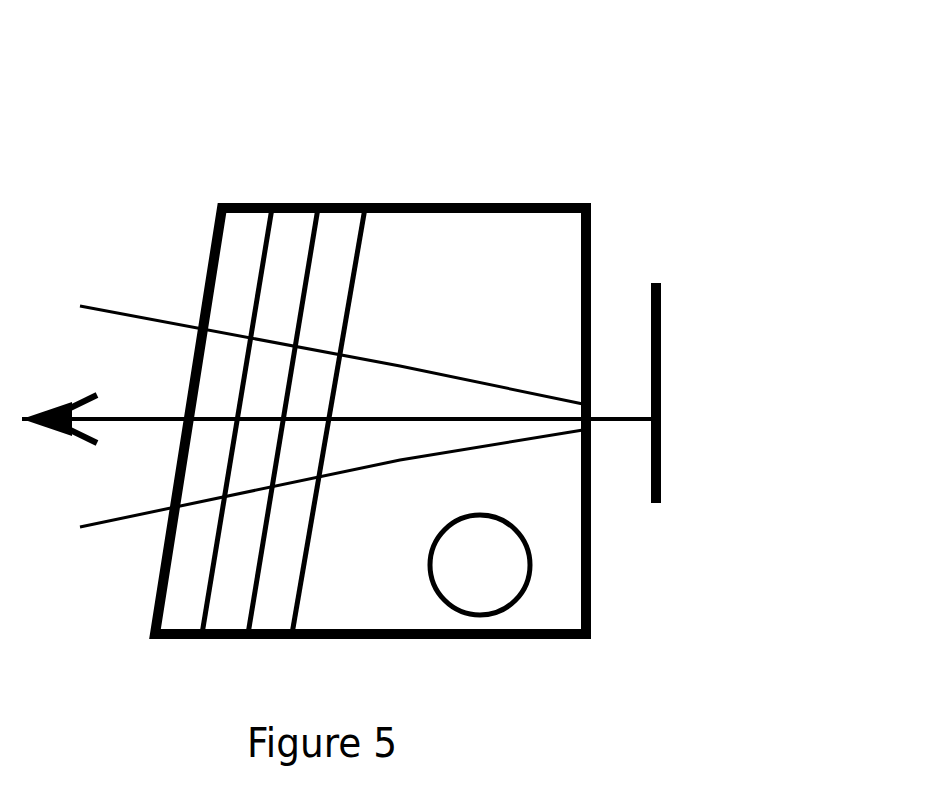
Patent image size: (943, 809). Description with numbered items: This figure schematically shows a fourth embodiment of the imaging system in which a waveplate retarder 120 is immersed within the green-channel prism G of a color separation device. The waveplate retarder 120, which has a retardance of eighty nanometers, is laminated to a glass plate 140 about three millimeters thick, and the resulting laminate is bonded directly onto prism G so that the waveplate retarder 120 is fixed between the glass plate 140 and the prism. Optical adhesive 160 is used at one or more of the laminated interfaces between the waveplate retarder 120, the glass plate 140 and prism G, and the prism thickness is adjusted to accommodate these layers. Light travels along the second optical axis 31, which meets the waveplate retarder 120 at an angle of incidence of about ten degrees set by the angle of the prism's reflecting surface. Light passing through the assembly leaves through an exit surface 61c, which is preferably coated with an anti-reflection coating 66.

The second optical axis 31 is at (130, 419).
The exit surface 61c is at (592, 306).
The anti-reflection coating 66 is at (477, 425).
The waveplate retarder 120 is at (306, 205).
The glass plate 140 is at (258, 205).
The optical adhesive 160 is at (350, 203).